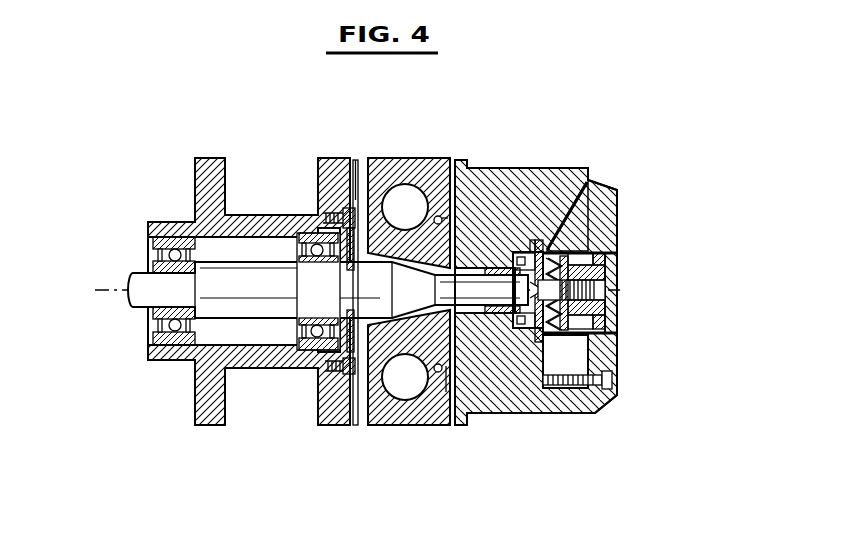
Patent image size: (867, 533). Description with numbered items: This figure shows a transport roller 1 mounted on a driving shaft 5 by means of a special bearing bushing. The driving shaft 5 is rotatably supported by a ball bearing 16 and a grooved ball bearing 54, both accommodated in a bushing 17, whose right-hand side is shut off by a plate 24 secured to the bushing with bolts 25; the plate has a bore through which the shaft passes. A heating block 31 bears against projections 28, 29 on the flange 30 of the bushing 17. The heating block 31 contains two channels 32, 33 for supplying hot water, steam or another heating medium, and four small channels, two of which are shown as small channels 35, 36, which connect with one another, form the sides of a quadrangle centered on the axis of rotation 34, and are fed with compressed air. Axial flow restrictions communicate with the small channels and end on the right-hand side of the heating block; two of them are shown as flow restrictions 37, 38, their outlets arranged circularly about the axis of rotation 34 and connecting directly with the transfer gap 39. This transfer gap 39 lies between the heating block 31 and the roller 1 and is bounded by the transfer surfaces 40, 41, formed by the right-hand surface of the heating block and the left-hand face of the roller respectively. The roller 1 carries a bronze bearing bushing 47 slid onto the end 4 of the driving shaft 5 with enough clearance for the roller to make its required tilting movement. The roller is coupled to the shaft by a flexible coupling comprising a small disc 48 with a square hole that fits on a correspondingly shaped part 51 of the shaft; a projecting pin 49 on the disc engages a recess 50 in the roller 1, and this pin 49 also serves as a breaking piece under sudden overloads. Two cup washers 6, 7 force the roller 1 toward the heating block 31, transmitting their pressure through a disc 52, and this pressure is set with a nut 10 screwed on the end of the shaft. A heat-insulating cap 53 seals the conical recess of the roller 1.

The roller 1 is at (587, 176).
The end of driving shaft 4 is at (473, 300).
The driving shaft 5 is at (240, 275).
The cup washer 6 is at (590, 256).
The cup washer 7 is at (598, 257).
The nut 10 is at (606, 305).
The ball bearing 16 is at (176, 234).
The bushing 17 is at (256, 222).
The plate 24 is at (352, 365).
The bolt 25 is at (336, 210).
The projection 28 is at (352, 205).
The projection 29 is at (358, 395).
The flange 30 is at (340, 380).
The heating block 31 is at (382, 402).
The channel 32 is at (356, 195).
The channel 33 is at (404, 405).
The axis of rotation 34 is at (112, 290).
The small channel 35 is at (405, 203).
The small channel 36 is at (446, 392).
The flow restriction 37 is at (436, 216).
The flow restriction 38 is at (440, 372).
The transfer gap 39 is at (455, 150).
The transfer surface 40 is at (444, 213).
The transfer surface 41 is at (468, 168).
The bronze bearing bushing 47 is at (536, 250).
The disc 48 is at (566, 200).
The pin 49 is at (540, 250).
The recess 50 is at (526, 255).
The square part of driving shaft 51 is at (531, 335).
The disc 52 is at (546, 388).
The heat-insulating cap 53 is at (612, 197).
The grooved ball bearing 54 is at (316, 345).